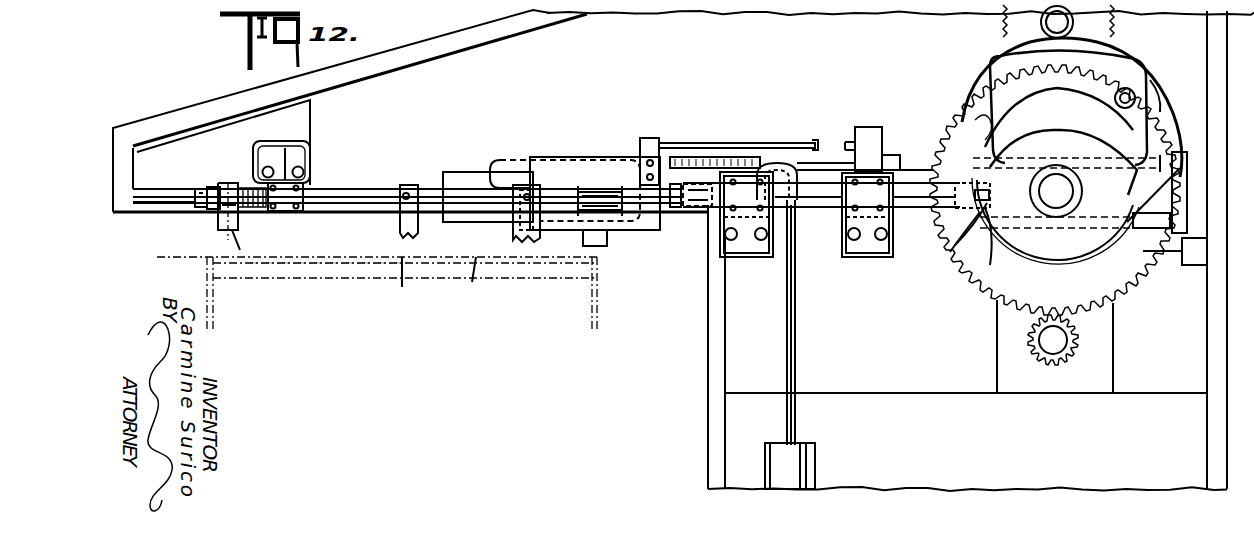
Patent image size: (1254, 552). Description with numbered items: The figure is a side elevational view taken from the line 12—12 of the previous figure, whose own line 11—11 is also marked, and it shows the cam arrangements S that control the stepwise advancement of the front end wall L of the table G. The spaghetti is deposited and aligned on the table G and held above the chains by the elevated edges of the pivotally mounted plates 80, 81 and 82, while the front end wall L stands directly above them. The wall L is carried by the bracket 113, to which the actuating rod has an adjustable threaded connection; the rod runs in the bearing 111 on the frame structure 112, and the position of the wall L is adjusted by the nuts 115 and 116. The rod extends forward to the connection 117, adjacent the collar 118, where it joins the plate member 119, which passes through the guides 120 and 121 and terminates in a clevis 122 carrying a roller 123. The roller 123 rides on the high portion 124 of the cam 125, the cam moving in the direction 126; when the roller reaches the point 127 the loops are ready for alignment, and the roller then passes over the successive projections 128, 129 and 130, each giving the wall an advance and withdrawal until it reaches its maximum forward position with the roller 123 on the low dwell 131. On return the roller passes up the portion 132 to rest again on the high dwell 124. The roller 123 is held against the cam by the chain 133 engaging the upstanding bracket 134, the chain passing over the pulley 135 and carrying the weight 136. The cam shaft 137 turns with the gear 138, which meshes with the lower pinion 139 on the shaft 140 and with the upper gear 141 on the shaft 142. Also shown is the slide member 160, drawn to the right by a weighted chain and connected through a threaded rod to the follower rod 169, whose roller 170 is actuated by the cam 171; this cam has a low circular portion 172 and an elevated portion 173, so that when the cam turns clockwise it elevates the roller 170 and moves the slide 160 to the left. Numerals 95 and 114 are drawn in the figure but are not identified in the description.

The section line 11 is at (122, 78).
The section line 12 is at (122, 4).
The plate 80 is at (302, 266).
The plate 81 is at (400, 287).
The plate 82 is at (468, 287).
The feed rod 95 is at (366, 195).
The bearing 111 is at (284, 196).
The frame structure 112 is at (292, 164).
The bracket 113 is at (196, 192).
The stop block 114 is at (225, 224).
The nut 115 is at (212, 187).
The nut 116 is at (248, 186).
The connection 117 is at (701, 202).
The collar 118 is at (676, 210).
The plate member 119 is at (819, 195).
The guide 120 is at (746, 245).
The guide 121 is at (867, 245).
The clevis 122 is at (972, 223).
The roller 123 is at (988, 196).
The high portion 124 is at (1005, 70).
The cam 125 is at (1167, 152).
The direction of cam movement 126 is at (1078, 105).
The point 127 is at (987, 85).
The projection 128 is at (978, 124).
The projection 129 is at (968, 147).
The projection 130 is at (970, 165).
The low dwell 131 is at (1021, 263).
The cam portion 132 is at (1162, 200).
The chain 133 is at (797, 331).
The upstanding bracket 134 is at (678, 159).
The pulley 135 is at (790, 143).
The weight 136 is at (815, 463).
The cam shaft 137 is at (1062, 186).
The gear 138 is at (988, 290).
The lower pinion 139 is at (1030, 352).
The shaft 140 is at (1030, 343).
The upper gear 141 is at (1114, 20).
The shaft 142 is at (1040, 21).
The slide member 160 is at (592, 160).
The follower rod 169 is at (826, 171).
The roller 170 is at (955, 232).
The cam 171 is at (1160, 76).
The low circular portion 172 is at (1058, 272).
The elevated portion 173 is at (1130, 92).
The table G is at (316, 256).
The front end wall L is at (244, 240).
The cam arrangements S is at (1174, 104).